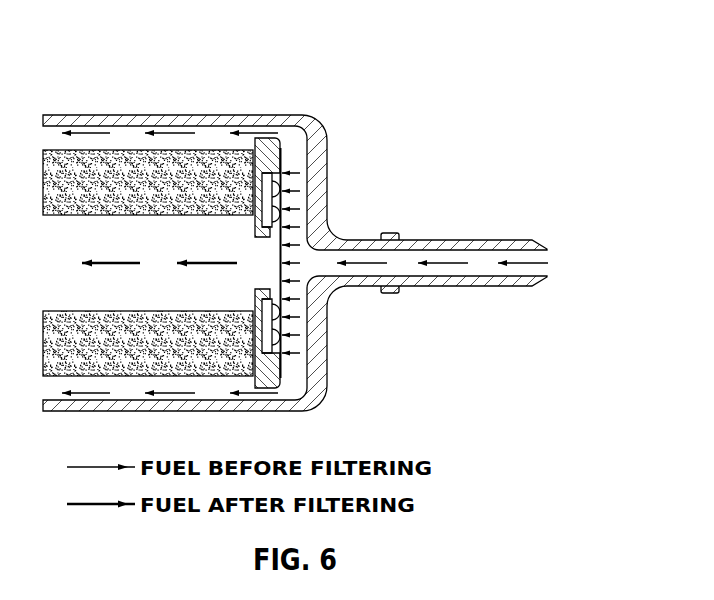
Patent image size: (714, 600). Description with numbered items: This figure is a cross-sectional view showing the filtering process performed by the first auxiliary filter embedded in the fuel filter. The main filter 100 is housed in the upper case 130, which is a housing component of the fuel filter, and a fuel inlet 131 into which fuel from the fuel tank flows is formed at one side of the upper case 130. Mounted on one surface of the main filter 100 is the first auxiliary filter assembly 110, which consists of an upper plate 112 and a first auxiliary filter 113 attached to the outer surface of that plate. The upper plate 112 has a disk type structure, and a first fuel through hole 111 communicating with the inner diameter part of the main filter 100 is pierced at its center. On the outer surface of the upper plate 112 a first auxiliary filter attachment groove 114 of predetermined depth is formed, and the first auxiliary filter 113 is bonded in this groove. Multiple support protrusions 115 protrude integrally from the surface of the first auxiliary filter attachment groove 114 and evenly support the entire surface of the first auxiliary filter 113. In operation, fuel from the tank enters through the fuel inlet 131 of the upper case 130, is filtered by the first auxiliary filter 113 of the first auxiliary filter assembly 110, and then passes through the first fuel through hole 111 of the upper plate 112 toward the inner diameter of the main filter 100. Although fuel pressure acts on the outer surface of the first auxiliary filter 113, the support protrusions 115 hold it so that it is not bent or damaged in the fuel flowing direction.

The main filter 100 is at (127, 133).
The first auxiliary filter assembly 110 is at (297, 132).
The first fuel through hole 111 is at (270, 280).
The upper plate 112 is at (265, 138).
The first auxiliary filter 113 is at (310, 238).
The first auxiliary filter attachment groove 114 is at (282, 164).
The support protrusions 115 is at (281, 188).
The upper case 130 is at (222, 98).
The fuel inlet 131 is at (475, 252).